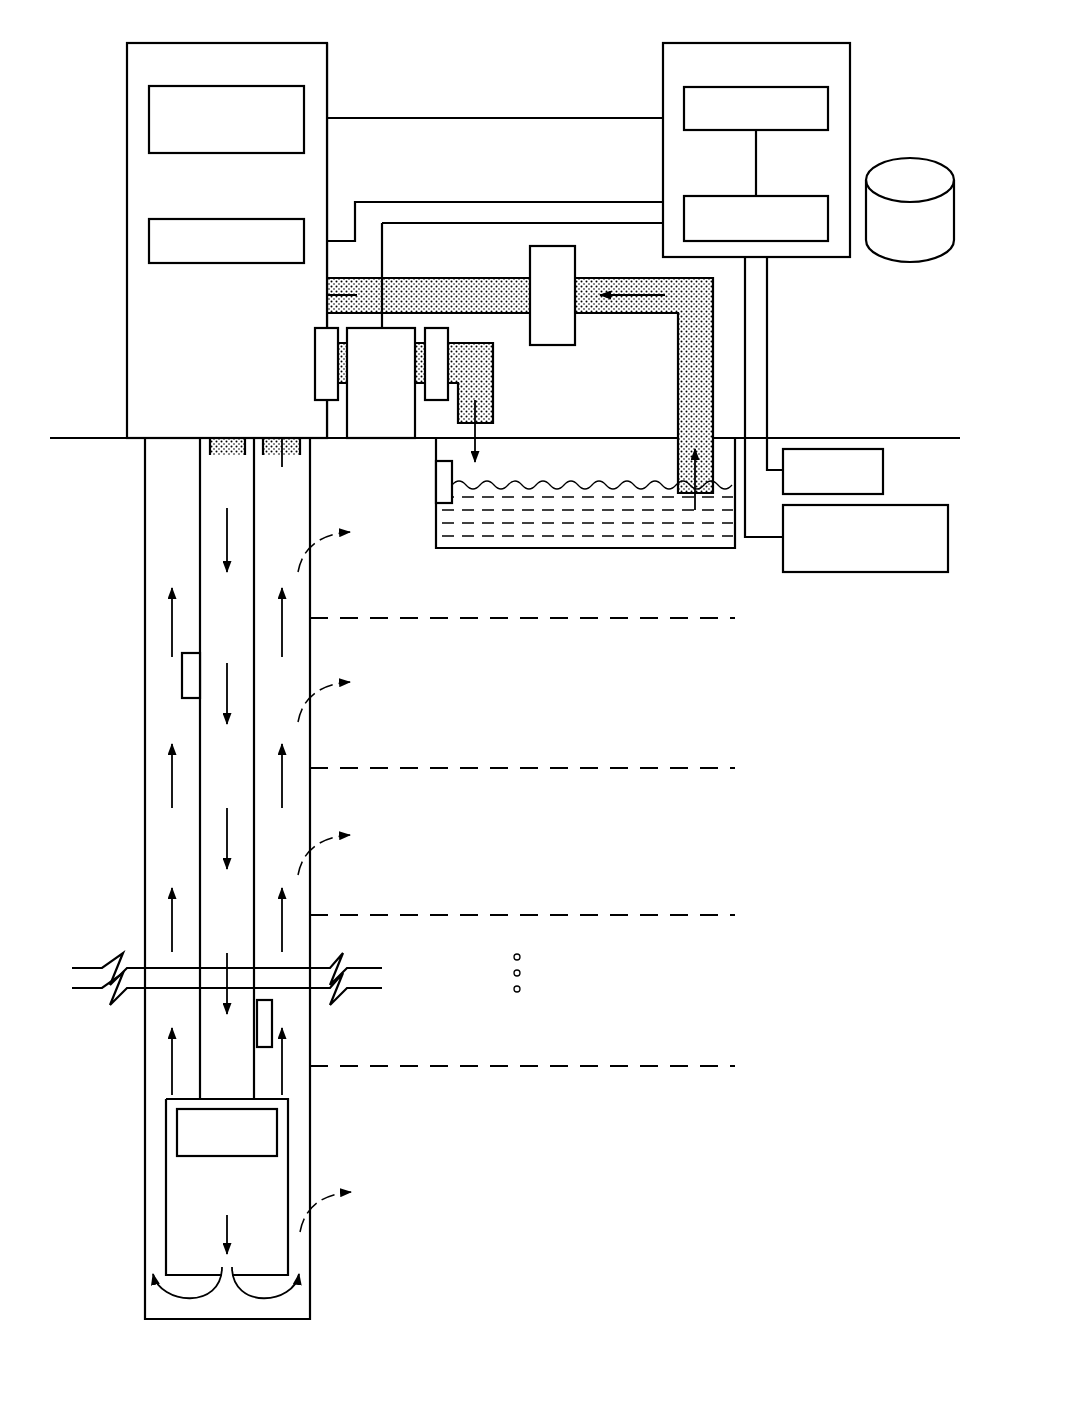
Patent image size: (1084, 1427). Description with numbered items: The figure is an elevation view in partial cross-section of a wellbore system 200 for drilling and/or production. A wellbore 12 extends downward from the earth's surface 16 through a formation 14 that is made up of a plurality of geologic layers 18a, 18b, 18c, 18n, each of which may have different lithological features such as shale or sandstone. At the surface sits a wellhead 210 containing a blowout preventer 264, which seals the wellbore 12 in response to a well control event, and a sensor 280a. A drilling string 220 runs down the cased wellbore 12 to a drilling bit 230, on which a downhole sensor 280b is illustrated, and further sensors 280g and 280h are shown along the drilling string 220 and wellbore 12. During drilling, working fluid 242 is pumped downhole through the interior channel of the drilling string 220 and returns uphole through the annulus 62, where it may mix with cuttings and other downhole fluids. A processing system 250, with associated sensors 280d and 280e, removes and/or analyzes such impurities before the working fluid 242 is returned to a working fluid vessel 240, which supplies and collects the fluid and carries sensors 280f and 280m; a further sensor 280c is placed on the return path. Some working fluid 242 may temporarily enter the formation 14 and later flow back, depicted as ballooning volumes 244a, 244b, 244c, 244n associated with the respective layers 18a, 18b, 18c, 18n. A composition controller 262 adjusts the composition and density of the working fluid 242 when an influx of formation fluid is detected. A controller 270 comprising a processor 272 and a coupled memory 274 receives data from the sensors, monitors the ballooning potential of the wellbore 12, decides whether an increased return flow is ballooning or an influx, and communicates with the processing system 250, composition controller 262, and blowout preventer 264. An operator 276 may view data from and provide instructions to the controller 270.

The wellbore system 200 is at (398, 56).
The wellhead 210 is at (185, 240).
The blowout preventer 264 is at (207, 155).
The sensor 280a is at (253, 218).
The controller 270 is at (802, 150).
The processor 272 is at (727, 132).
The memory 274 is at (778, 195).
The operator 276 is at (888, 242).
The processing system 250 is at (360, 394).
The sensor 280d is at (332, 402).
The sensor 280e is at (449, 365).
The sensor 280c is at (576, 327).
The sensor 280f is at (453, 480).
The working fluid vessel 240 is at (585, 524).
The working fluid 242 is at (487, 549).
The sensor 280m is at (833, 448).
The composition controller 262 is at (868, 573).
The earth's surface 16 is at (92, 437).
The annulus 62 is at (162, 495).
The formation 14 is at (107, 559).
The wellbore 12 is at (143, 618).
The drilling string 220 is at (199, 816).
The annulus sensor 280g is at (181, 677).
The tubing sensor 280h is at (273, 1014).
The drilling bit 230 is at (183, 1198).
The sensor 280b is at (212, 1158).
The geologic layer 18a is at (692, 601).
The geologic layer 18b is at (692, 709).
The geologic layer 18c is at (692, 858).
The geologic layer 18n is at (692, 1154).
The ballooning volume 244a is at (321, 545).
The ballooning volume 244b is at (321, 694).
The ballooning volume 244c is at (321, 847).
The ballooning volume 244n is at (323, 1200).